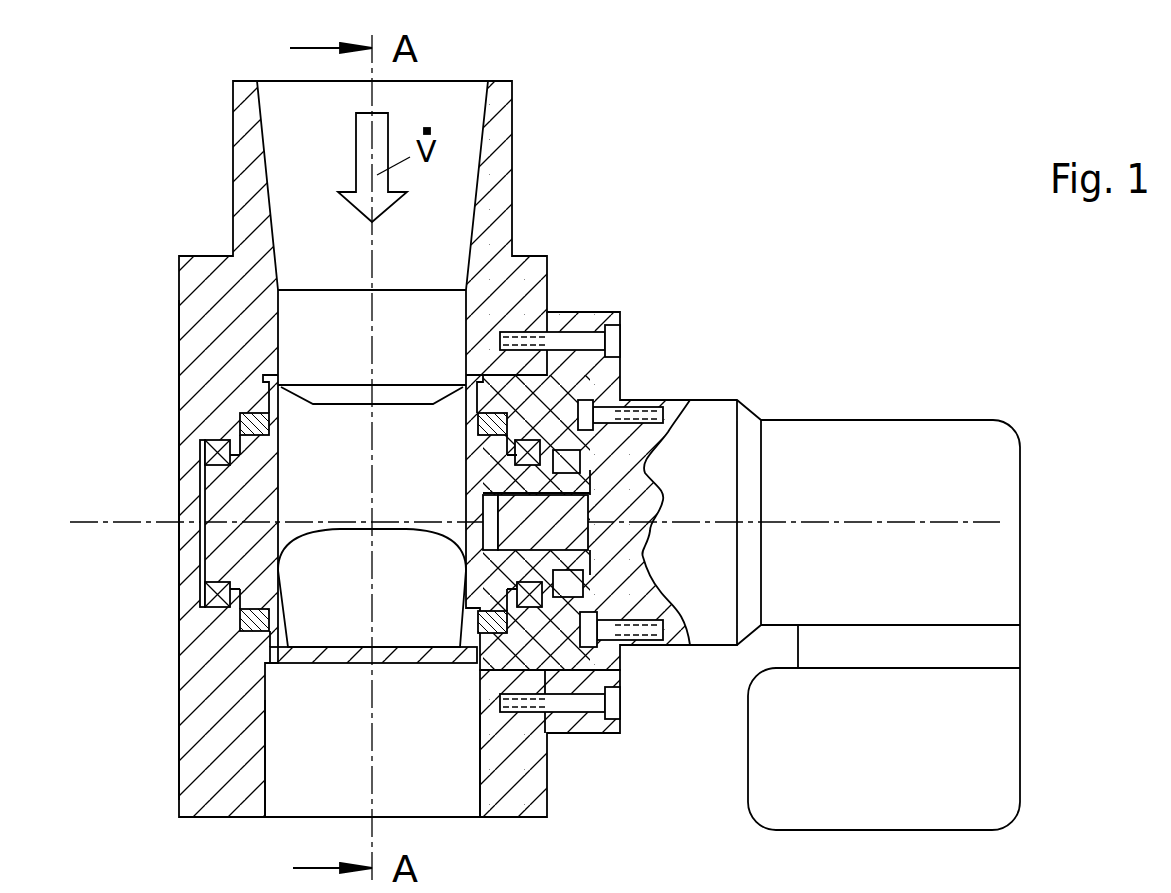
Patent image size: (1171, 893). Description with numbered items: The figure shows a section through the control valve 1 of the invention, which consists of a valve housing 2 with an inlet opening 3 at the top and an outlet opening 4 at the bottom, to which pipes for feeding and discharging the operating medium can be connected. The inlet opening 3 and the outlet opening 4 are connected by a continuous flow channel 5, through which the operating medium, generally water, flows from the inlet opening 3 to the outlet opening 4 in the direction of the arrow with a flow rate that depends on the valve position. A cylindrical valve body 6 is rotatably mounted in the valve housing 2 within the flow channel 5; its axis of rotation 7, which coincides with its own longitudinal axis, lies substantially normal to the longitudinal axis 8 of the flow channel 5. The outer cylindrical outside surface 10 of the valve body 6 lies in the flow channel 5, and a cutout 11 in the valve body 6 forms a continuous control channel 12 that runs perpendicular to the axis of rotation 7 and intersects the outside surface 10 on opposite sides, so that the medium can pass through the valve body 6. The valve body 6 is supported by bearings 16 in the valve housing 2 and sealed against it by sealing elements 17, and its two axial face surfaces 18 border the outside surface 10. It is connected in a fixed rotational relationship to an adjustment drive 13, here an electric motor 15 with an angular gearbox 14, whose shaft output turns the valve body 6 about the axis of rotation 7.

The control valve 1 is at (778, 163).
The valve housing 2 is at (493, 168).
The inlet opening 3 is at (457, 81).
The outlet opening 4 is at (303, 818).
The flow channel 5 is at (318, 328).
The valve body 6 is at (230, 493).
The axis of rotation 7 is at (535, 496).
The longitudinal axis 8 is at (373, 748).
The outside surface 10 is at (342, 665).
The cutout 11 is at (317, 435).
The control channel 12 is at (436, 606).
The adjustment drive 13 is at (992, 365).
The angular gearbox 14 is at (965, 499).
The electric motor 15 is at (978, 727).
The bearings 16 is at (232, 583).
The sealing elements 17 is at (260, 615).
The axial face surfaces 18 is at (263, 637).